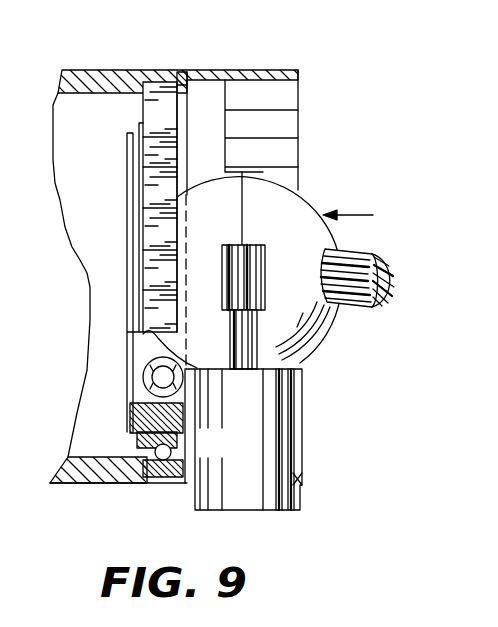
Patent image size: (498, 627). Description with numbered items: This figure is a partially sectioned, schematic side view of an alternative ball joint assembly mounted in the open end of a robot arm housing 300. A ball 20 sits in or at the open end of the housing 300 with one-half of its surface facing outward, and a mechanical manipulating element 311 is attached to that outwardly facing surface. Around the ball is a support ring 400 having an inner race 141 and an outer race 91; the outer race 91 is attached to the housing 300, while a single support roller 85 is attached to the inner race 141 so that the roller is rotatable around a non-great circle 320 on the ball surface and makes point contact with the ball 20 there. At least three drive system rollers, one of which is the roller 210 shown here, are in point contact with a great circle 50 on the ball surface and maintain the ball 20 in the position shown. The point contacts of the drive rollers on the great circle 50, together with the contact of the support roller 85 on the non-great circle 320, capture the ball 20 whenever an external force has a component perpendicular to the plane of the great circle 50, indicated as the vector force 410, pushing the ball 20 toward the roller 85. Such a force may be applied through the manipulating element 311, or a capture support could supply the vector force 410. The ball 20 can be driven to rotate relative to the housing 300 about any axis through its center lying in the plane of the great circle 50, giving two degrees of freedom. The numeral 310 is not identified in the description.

The robot arm housing 300 is at (128, 70).
The support ring 400 is at (150, 118).
The non-great circle 320 is at (186, 245).
The great circle 50 is at (242, 205).
The drive system roller 210 is at (265, 283).
The vector force 410 is at (348, 215).
The manipulating element 311 is at (344, 309).
The ball 20 is at (319, 342).
The support roller 85 is at (143, 373).
The inner race 141 is at (195, 447).
The outer race 91 is at (165, 485).
The tube 310 is at (300, 498).